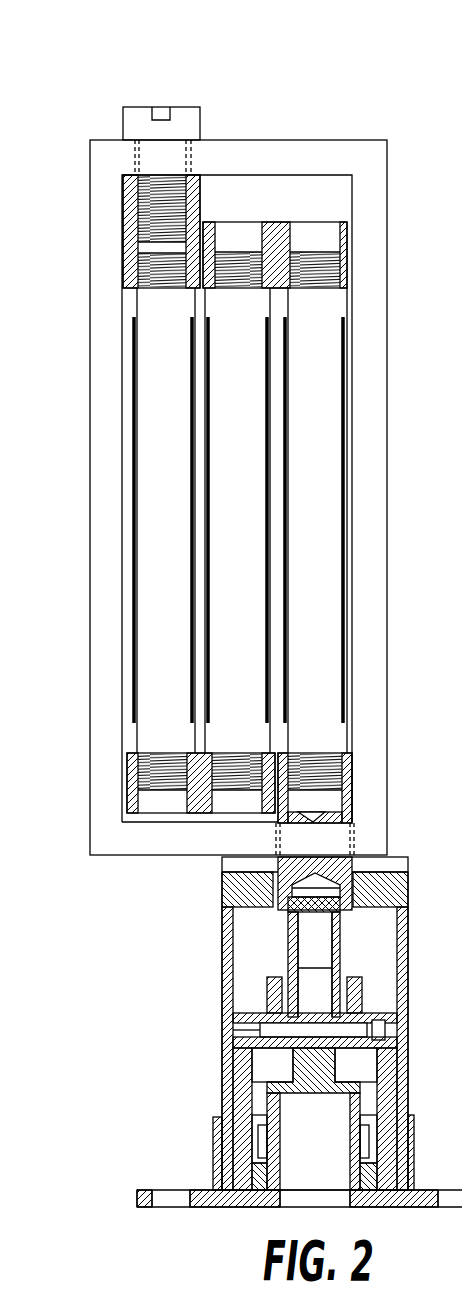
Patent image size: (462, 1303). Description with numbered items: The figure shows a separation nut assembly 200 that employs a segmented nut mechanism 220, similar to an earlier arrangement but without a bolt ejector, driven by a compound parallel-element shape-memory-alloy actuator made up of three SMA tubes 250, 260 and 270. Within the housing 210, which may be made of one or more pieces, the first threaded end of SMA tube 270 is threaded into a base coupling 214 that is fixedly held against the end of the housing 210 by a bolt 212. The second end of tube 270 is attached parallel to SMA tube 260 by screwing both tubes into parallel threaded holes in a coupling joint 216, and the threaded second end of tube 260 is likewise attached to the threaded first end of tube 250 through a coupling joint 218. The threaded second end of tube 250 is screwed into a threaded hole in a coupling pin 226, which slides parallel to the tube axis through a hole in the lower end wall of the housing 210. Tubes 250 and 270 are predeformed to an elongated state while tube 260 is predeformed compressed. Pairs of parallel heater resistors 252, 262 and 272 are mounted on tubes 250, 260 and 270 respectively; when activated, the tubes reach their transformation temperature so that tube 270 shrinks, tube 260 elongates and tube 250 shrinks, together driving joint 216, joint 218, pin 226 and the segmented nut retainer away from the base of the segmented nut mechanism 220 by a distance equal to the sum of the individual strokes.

The separation nut assembly 200 is at (345, 67).
The housing 210 is at (373, 291).
The bolt 212 is at (200, 127).
The base coupling 214 is at (127, 207).
The coupling joint 216 is at (140, 795).
The coupling joint 218 is at (317, 220).
The segmented nut mechanism 220 is at (130, 897).
The coupling pin 226 is at (352, 781).
The SMA tube 250 is at (318, 345).
The heater resistors 252 is at (345, 390).
The SMA tube 260 is at (235, 440).
The heater resistors 262 is at (268, 475).
The SMA tube 270 is at (153, 423).
The heater resistors 272 is at (130, 480).